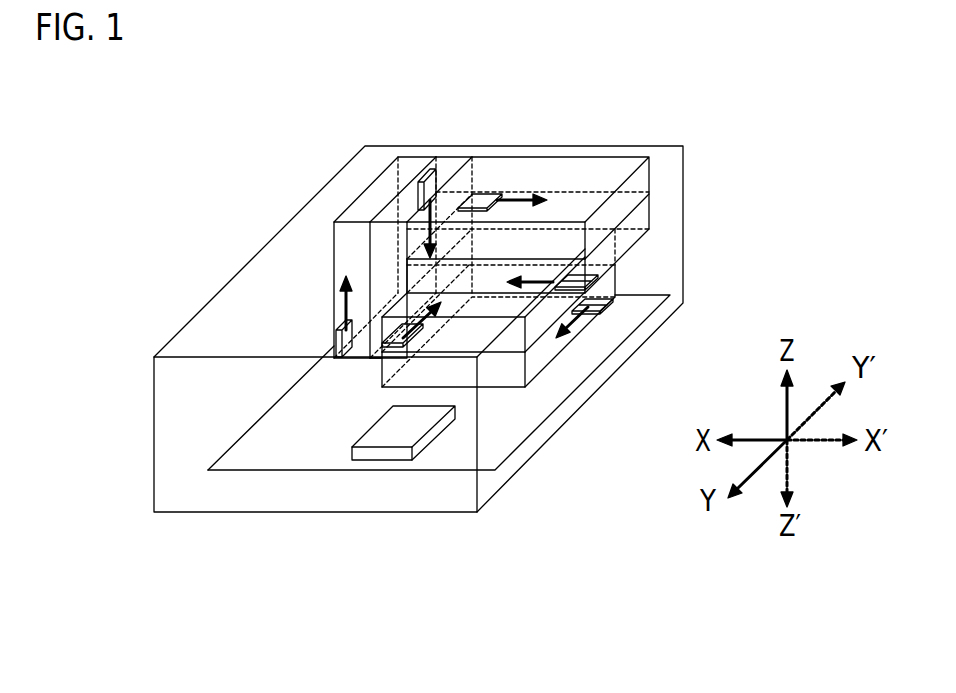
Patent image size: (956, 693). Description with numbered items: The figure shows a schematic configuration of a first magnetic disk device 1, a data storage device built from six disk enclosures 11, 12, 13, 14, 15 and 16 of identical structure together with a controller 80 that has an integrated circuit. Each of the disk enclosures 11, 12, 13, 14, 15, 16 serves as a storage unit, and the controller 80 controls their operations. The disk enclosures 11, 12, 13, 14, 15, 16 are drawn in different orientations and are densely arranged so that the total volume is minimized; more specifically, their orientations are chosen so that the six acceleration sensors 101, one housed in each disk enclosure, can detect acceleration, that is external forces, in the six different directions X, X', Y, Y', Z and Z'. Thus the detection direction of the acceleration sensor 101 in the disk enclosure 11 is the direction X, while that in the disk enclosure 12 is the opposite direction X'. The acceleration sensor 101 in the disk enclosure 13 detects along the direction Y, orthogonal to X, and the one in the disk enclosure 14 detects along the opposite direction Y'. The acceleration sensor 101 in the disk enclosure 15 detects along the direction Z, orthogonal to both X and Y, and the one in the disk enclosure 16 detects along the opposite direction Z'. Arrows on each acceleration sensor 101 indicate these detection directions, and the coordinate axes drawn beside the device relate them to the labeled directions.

The magnetic disk device 1 is at (250, 512).
The disk enclosure 11 is at (652, 212).
The disk enclosure 12 is at (650, 170).
The disk enclosure 13 is at (540, 366).
The disk enclosure 14 is at (530, 335).
The disk enclosure 15 is at (410, 158).
The disk enclosure 16 is at (450, 158).
The controller 80 is at (400, 462).
The acceleration sensor 101 is at (490, 190).